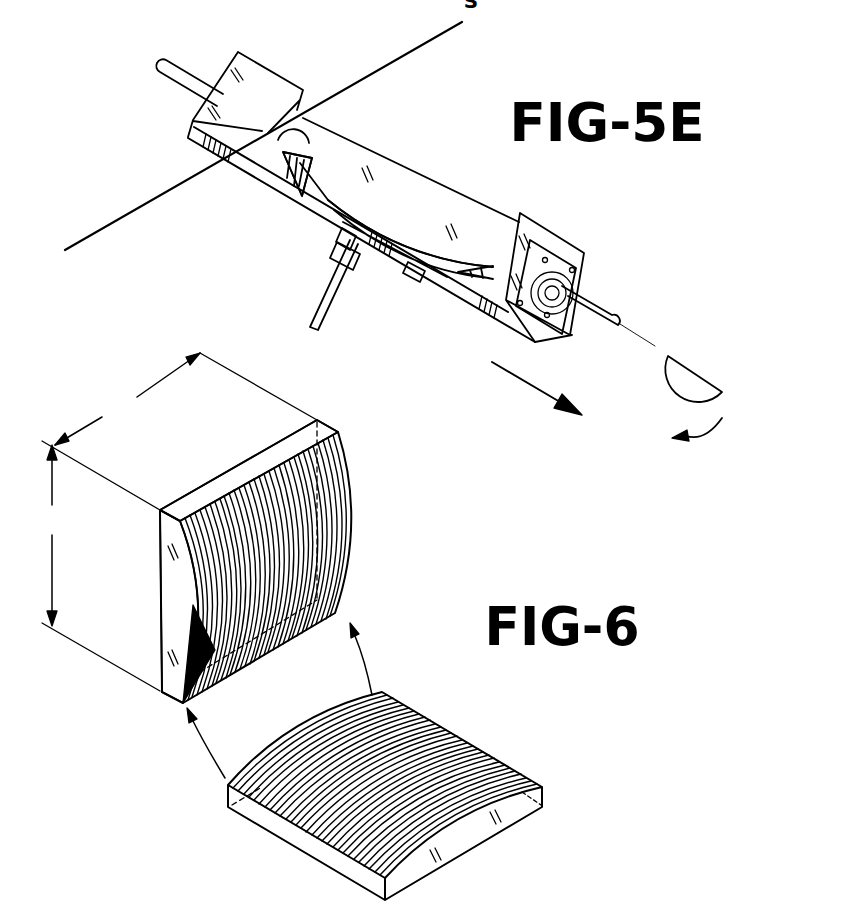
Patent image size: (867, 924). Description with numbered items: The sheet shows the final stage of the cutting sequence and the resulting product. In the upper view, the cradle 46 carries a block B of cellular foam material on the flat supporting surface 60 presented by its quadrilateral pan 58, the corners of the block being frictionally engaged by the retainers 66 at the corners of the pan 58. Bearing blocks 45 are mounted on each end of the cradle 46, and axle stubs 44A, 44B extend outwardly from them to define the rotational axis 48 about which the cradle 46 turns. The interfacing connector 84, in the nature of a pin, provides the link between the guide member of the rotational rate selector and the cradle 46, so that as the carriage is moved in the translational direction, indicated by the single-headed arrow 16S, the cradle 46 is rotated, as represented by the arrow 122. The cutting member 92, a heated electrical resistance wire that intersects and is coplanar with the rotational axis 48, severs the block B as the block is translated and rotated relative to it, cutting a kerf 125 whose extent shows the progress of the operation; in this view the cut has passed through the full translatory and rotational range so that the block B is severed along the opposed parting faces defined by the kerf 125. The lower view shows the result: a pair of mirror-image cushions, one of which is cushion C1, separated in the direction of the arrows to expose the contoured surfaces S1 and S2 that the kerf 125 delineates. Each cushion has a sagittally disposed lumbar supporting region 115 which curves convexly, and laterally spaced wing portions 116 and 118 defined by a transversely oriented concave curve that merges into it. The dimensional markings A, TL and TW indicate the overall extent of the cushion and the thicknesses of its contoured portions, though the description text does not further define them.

In FIG. 5E, the cutting member 92 is at (344, 83).
In FIG. 5E, the cradle 46 is at (459, 314).
In FIG. 5E, the axle stub 44B is at (174, 68).
In FIG. 5E, the block B is at (413, 160).
In FIG. 5E, the kerf 125 is at (332, 183).
In FIG. 5E, the retainer 66 is at (292, 221).
In FIG. 5E, the flat supporting surface 60 is at (335, 243).
In FIG. 5E, the interfacing connector 84 is at (333, 325).
In FIG. 5E, the quadrilateral pan 58 is at (412, 266).
In FIG. 5E, the bearing block 45 is at (560, 257).
In FIG. 5E, the axle stub 44A is at (603, 315).
In FIG. 5E, the rotational axis 48 is at (629, 358).
In FIG. 5E, the translatory motion arrow 16S is at (513, 377).
In FIG. 5E, the rotational motion arrow 122 is at (713, 428).
In FIG. 6, the dimension A is at (179, 522).
In FIG. 6, the contoured surface S2 is at (350, 559).
In FIG. 6, the lens thickness TL is at (275, 895).
In FIG. 6, the wall thickness TW is at (500, 893).
In FIG. 6, the cushion C1 is at (605, 771).
In FIG. 6, the wing portion 116 is at (193, 639).
In FIG. 6, the lumbar supporting region 115 is at (273, 537).
In FIG. 6, the wing portion 118 is at (352, 534).
In FIG. 6, the contoured surface S1 is at (418, 748).